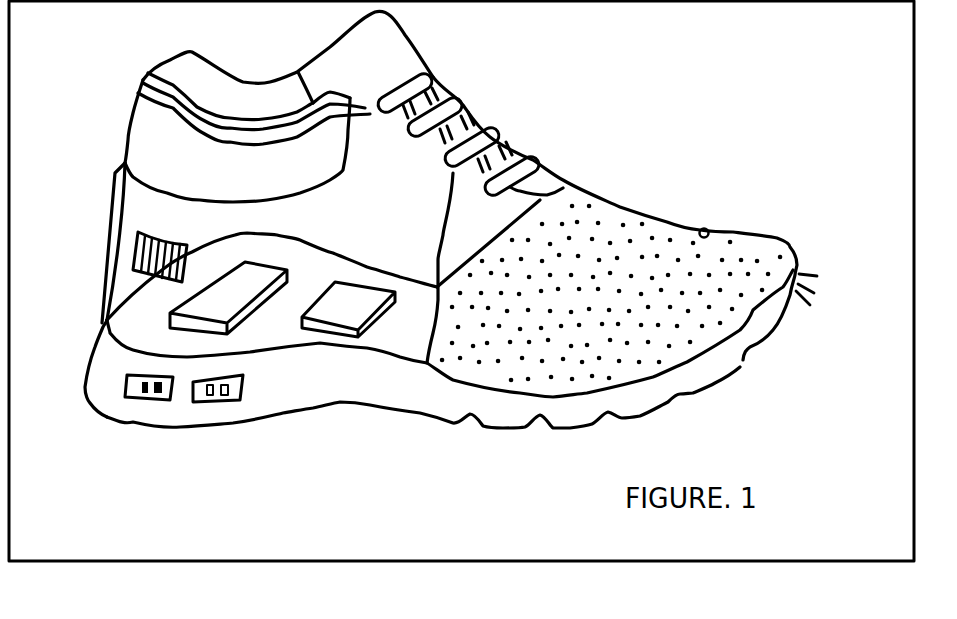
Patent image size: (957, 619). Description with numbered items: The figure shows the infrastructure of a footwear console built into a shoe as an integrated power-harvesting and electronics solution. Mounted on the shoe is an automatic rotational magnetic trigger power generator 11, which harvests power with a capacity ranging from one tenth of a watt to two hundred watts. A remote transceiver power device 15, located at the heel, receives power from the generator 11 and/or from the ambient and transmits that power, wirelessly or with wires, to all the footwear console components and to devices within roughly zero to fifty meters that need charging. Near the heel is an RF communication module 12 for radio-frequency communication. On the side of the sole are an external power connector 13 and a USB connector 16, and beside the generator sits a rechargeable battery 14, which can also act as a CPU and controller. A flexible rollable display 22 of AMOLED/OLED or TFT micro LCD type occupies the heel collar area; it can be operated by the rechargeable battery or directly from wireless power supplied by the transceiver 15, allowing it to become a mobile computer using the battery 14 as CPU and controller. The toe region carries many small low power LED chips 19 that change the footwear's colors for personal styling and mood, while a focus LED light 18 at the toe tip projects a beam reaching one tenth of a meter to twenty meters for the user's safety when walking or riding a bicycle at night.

The automatic rotational magnetic trigger power generator 11 is at (230, 290).
The RF communication module 12 is at (140, 275).
The external power connector 13 is at (148, 400).
The rechargeable battery 14 is at (338, 310).
The remote transceiver power device 15 is at (117, 229).
The USB connector 16 is at (217, 402).
The focus LED light 18 is at (796, 268).
The low power LED chips 19 is at (708, 228).
The flexible rollable display 22 is at (147, 143).